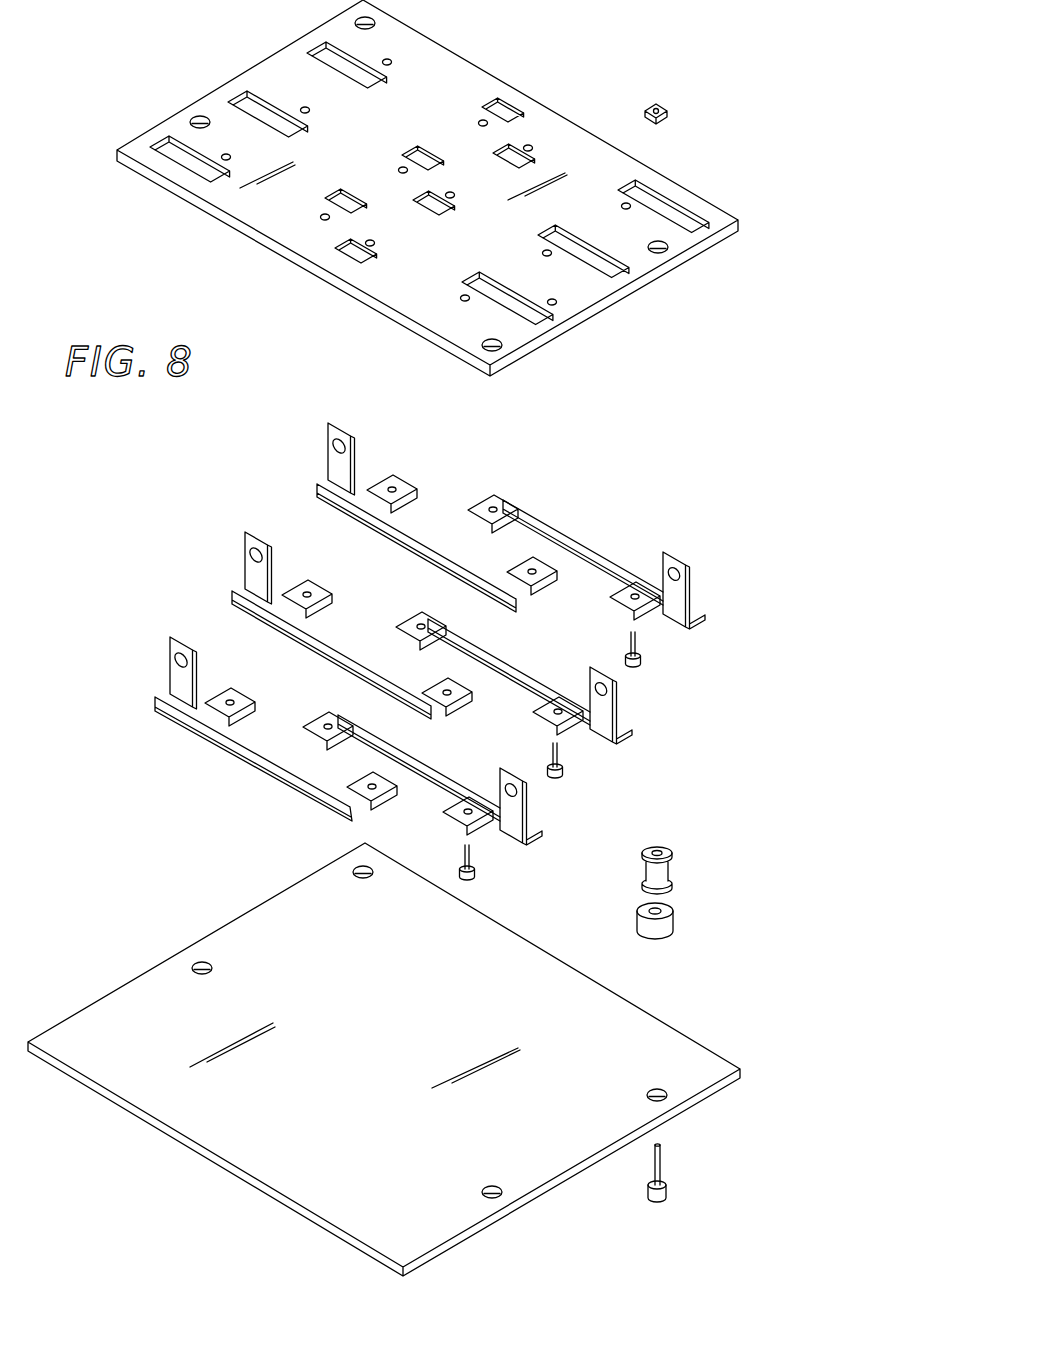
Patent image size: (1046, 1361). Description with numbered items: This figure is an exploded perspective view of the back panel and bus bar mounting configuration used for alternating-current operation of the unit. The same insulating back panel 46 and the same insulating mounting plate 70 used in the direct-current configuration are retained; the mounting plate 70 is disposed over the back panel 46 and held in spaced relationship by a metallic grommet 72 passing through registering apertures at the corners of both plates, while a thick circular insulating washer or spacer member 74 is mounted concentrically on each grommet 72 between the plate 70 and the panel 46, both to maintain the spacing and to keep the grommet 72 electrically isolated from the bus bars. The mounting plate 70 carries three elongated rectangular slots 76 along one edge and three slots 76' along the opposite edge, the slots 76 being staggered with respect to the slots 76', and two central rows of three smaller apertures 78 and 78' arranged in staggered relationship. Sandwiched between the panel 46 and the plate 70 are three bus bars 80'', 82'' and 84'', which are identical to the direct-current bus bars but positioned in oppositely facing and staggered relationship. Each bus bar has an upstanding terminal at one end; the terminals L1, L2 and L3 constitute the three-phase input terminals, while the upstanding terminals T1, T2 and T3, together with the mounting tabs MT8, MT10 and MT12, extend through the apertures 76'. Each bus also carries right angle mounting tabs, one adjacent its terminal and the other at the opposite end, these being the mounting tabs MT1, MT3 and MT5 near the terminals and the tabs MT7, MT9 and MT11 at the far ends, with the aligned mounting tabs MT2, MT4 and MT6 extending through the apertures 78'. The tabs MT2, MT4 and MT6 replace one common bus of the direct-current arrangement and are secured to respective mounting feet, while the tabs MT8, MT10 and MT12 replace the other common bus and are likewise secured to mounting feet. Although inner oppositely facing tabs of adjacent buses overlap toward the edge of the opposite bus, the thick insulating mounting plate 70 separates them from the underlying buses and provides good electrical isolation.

The mounting plate 70 is at (685, 247).
The elongated rectangular apertures 76 is at (275, 105).
The elongated rectangular apertures 76' is at (594, 242).
The smaller apertures 78 is at (444, 191).
The smaller apertures 78' is at (437, 136).
The bus bar 80'' is at (327, 759).
The bus bar 82'' is at (411, 658).
The bus bar 84'' is at (490, 548).
The input terminal L1 is at (183, 642).
The input terminal L2 is at (257, 532).
The input terminal L3 is at (345, 425).
The mounting tab MT1 is at (248, 693).
The mounting tab MT2 is at (310, 718).
The mounting tab MT3 is at (322, 593).
The mounting tab MT4 is at (405, 620).
The mounting tab MT5 is at (403, 478).
The mounting tab MT6 is at (495, 502).
The mounting tab MT7 is at (388, 793).
The mounting tab MT8 is at (482, 828).
The mounting tab MT9 is at (468, 688).
The mounting tab MT10 is at (568, 723).
The mounting tab MT11 is at (547, 577).
The mounting tab MT12 is at (645, 607).
The upstanding terminal T1 is at (527, 807).
The upstanding terminal T2 is at (615, 708).
The upstanding terminal T3 is at (693, 588).
The metallic grommet 72 is at (672, 865).
The washer or spacer member 74 is at (673, 927).
The back panel 46 is at (722, 1083).